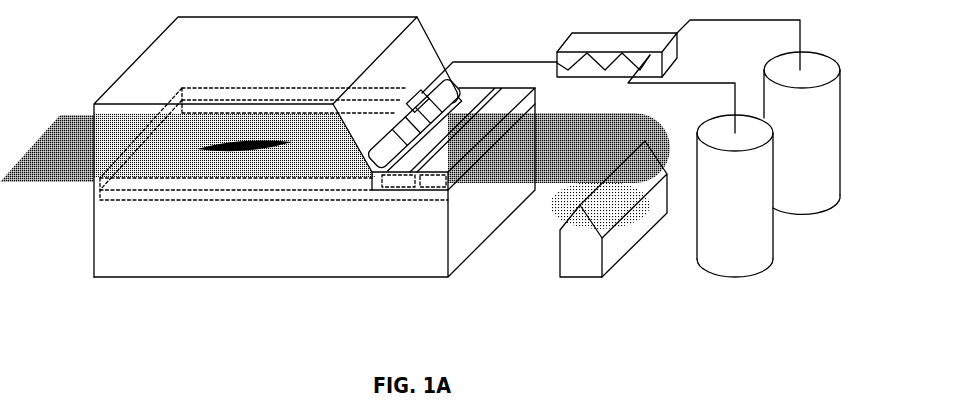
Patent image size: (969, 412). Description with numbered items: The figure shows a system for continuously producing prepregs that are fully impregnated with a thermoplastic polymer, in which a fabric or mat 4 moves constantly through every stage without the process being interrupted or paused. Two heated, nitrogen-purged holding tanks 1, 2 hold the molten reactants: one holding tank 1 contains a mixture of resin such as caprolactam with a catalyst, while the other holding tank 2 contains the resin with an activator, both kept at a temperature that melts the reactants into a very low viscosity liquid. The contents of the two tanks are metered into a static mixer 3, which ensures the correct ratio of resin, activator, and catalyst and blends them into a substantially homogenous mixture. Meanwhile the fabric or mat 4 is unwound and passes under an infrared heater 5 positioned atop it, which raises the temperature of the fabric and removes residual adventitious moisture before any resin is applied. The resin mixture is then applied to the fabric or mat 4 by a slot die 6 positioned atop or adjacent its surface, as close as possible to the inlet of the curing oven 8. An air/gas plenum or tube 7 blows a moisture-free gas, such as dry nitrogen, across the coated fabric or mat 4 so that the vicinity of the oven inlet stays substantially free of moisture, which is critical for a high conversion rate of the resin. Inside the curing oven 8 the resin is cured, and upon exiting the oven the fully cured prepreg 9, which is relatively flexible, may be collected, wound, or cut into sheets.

The holding tank 1 is at (735, 196).
The holding tank 2 is at (802, 133).
The static mixer 3 is at (617, 42).
The fabric or mat 4 is at (559, 171).
The infrared heater 5 is at (453, 139).
The slot die 6 is at (413, 122).
The air/gas plenum or tube 7 is at (357, 174).
The curing oven 8 is at (314, 147).
The fully cured prepreg 9 is at (47, 148).